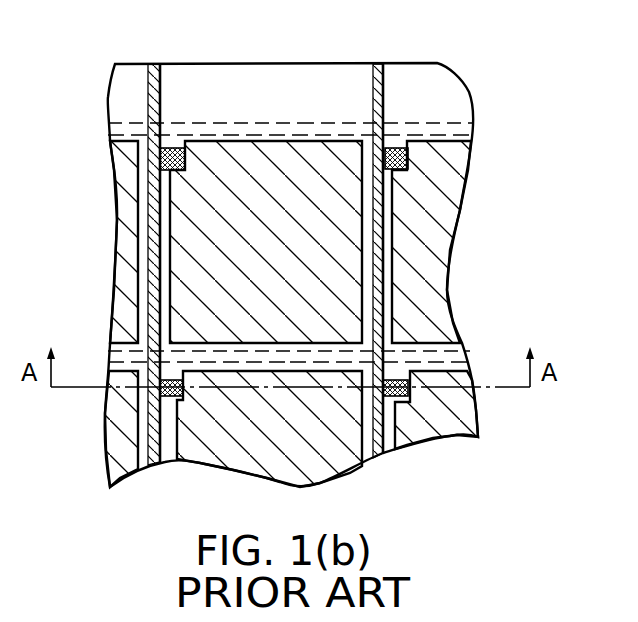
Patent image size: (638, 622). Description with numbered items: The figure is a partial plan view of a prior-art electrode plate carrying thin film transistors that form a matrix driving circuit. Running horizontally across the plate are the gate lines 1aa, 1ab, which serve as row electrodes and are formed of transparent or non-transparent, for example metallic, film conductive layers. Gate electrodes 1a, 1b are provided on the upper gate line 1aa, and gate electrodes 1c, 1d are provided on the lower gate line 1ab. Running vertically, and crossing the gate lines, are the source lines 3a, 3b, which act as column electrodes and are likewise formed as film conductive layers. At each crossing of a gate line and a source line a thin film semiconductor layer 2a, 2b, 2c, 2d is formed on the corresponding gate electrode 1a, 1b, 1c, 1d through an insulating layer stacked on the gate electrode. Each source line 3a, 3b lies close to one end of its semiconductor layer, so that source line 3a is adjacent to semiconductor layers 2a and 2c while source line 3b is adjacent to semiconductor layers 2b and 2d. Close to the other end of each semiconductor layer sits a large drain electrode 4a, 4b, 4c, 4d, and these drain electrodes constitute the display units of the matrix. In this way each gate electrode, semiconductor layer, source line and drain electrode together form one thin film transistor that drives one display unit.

The gate electrode 1a is at (139, 123).
The gate line 1aa is at (108, 133).
The gate line 1ab is at (120, 355).
The gate electrode 1b is at (374, 118).
The gate electrode 1c is at (160, 370).
The gate electrode 1d is at (398, 363).
The thin film semiconductor layer 2a is at (182, 147).
The thin film semiconductor layer 2b is at (406, 147).
The thin film semiconductor layer 2c is at (186, 398).
The thin film semiconductor layer 2d is at (415, 397).
The source line 3a is at (157, 64).
The source line 3b is at (382, 64).
The drain electrode 4a is at (200, 241).
The drain electrode 4b is at (443, 203).
The drain electrode 4c is at (327, 450).
The drain electrode 4d is at (452, 403).